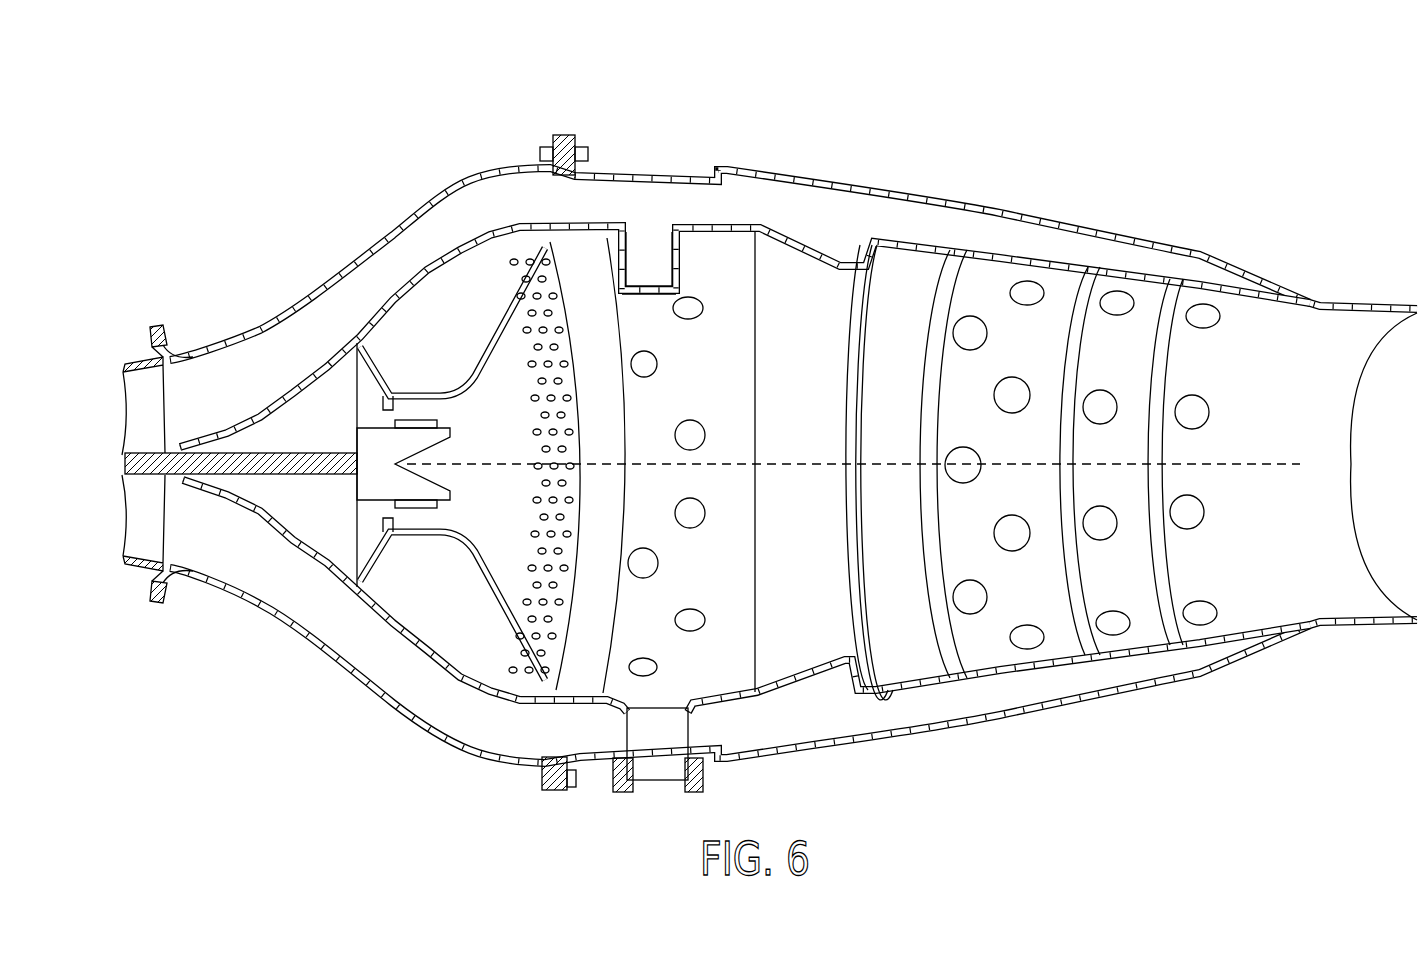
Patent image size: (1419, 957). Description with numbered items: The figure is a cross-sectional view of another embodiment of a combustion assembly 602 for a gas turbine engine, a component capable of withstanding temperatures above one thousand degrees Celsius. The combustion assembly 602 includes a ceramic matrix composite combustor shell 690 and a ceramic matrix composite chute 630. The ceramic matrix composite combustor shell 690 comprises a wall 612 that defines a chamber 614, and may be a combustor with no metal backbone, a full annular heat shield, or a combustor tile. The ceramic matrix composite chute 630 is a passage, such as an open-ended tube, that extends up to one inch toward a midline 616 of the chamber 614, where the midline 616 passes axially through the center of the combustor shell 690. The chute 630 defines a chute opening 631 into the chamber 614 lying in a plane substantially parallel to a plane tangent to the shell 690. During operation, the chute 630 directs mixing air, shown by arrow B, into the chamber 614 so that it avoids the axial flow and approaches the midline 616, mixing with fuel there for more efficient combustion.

The combustion assembly 602 is at (1183, 126).
The wall 612 is at (809, 278).
The chamber 614 is at (513, 533).
The midline 616 is at (810, 472).
The ceramic matrix composite chute 630 is at (678, 262).
The chute opening 631 is at (627, 297).
The ceramic matrix composite combustor shell 690 is at (793, 240).